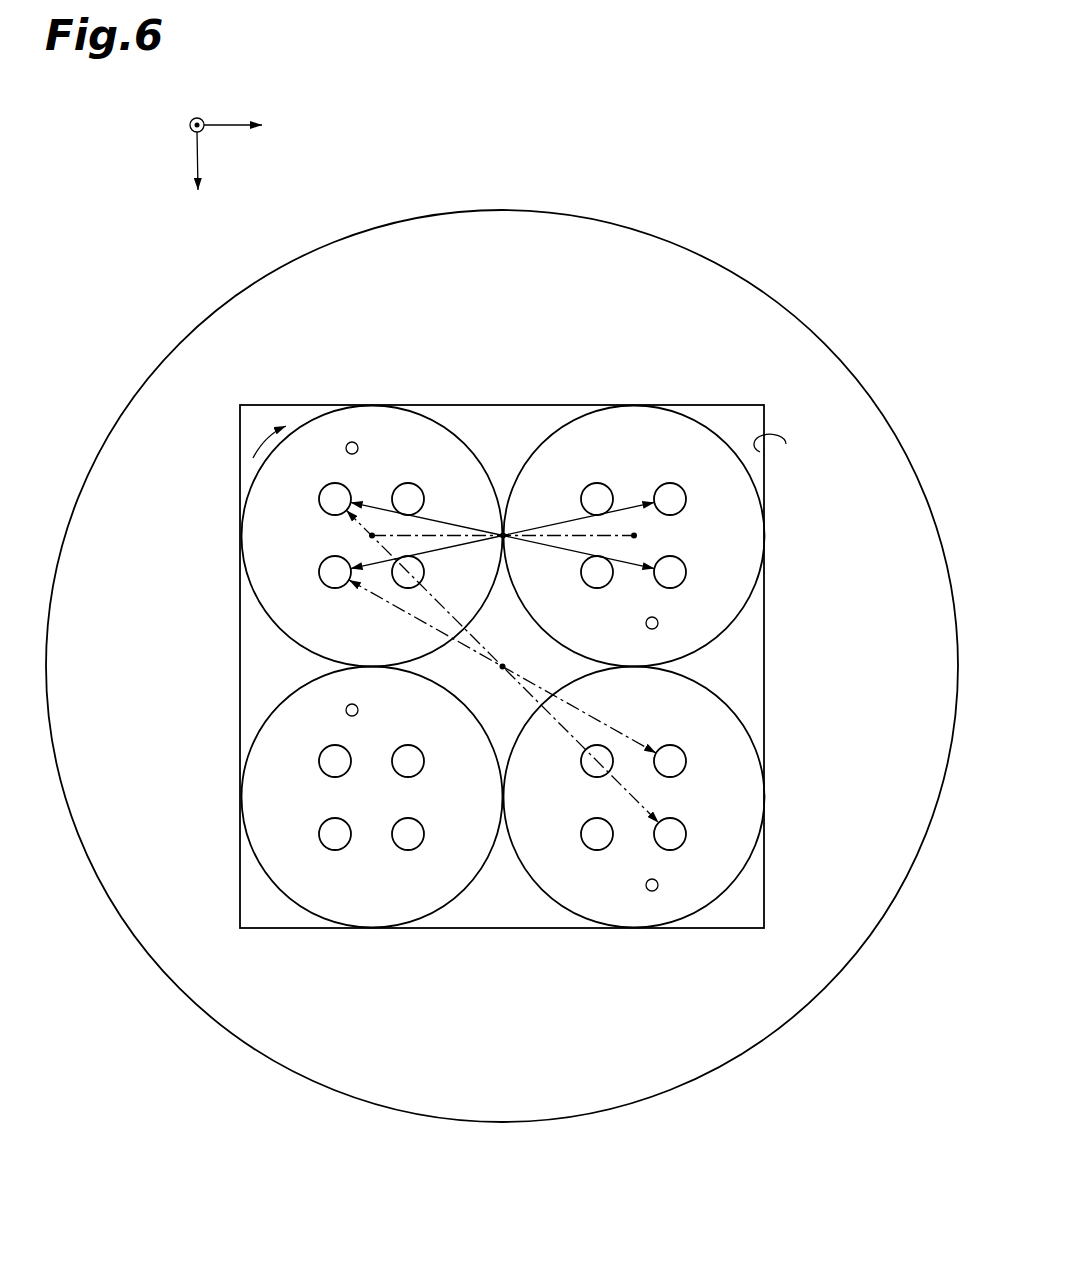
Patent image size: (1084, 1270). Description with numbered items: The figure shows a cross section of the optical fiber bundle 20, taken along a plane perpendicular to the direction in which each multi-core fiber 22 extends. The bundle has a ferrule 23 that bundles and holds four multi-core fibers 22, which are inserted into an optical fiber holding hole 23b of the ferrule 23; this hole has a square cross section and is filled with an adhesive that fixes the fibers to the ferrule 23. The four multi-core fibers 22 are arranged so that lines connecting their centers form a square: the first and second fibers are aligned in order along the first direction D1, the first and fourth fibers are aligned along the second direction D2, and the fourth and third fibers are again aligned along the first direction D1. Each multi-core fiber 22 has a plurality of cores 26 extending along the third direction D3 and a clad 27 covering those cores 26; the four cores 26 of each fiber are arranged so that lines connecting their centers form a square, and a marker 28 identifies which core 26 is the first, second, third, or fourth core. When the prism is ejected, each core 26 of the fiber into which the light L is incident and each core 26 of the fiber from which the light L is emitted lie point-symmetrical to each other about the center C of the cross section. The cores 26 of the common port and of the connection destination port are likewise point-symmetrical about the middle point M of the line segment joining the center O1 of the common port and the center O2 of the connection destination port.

The optical fiber bundle 20 is at (754, 191).
The multi-core fiber 22 is at (501, 649).
The ferrule 23 is at (622, 262).
The optical fiber holding hole 23b is at (786, 444).
The core 26 is at (663, 1022).
The clad 27 is at (247, 498).
The marker 28 is at (350, 442).
The center of the common port O1 is at (374, 530).
The center of the connection destination port O2 is at (634, 530).
The middle point M is at (512, 528).
The center of the cross section C is at (502, 672).
The light L is at (356, 537).
The first direction D1 is at (198, 177).
The second direction D2 is at (255, 126).
The third direction D3 is at (178, 111).